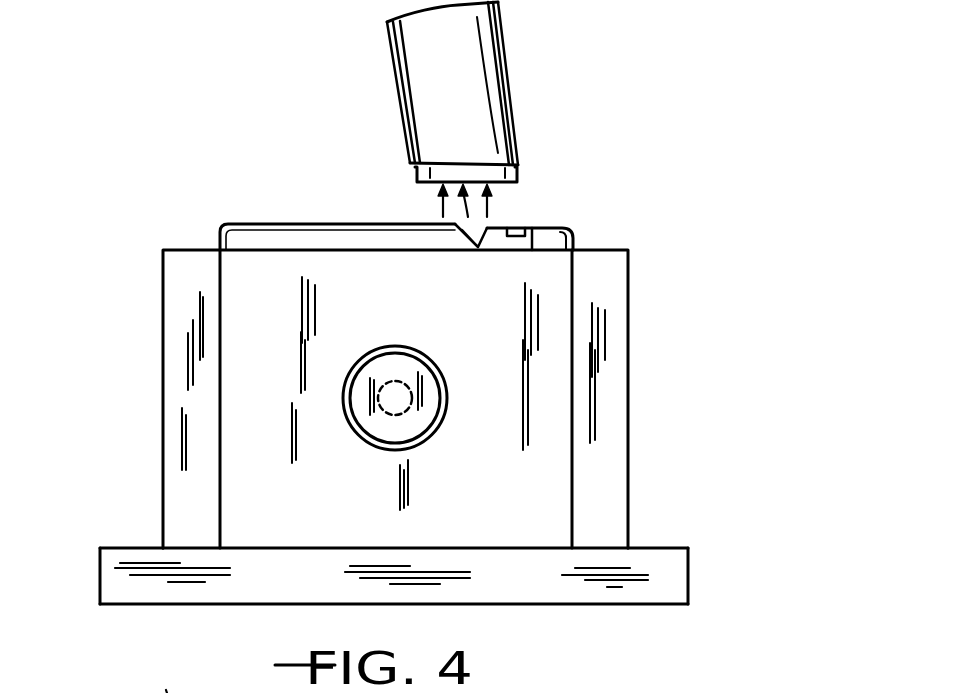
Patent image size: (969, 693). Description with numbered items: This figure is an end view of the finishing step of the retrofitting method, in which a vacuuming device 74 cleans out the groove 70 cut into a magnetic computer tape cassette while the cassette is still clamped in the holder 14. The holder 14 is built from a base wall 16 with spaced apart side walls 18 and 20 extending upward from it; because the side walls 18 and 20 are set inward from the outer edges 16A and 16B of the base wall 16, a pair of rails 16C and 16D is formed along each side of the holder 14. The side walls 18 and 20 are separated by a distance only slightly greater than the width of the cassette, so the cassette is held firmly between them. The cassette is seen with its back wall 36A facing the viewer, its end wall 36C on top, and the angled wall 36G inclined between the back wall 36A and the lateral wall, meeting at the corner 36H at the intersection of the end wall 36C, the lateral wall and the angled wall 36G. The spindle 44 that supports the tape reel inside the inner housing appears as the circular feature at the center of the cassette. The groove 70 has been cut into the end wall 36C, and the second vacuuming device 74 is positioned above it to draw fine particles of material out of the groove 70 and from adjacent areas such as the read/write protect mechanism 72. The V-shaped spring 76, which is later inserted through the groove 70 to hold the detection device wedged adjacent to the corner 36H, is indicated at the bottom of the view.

The holder 14 is at (643, 360).
The base wall 16 is at (555, 585).
The outer edge of base wall 16A is at (100, 575).
The outer edge of base wall 16B is at (672, 578).
The rail 16C is at (120, 547).
The rail 16D is at (655, 549).
The side wall 18 is at (178, 318).
The side wall 20 is at (615, 403).
The back wall 36A is at (550, 287).
The end wall 36C is at (303, 222).
The angled wall 36G is at (552, 228).
The corner 36H is at (577, 233).
The spindle 44 is at (412, 427).
The groove 70 is at (483, 253).
The read/write protect mechanism 72 is at (517, 232).
The vacuuming device 74 is at (513, 72).
The V-shaped spring 76 is at (167, 692).